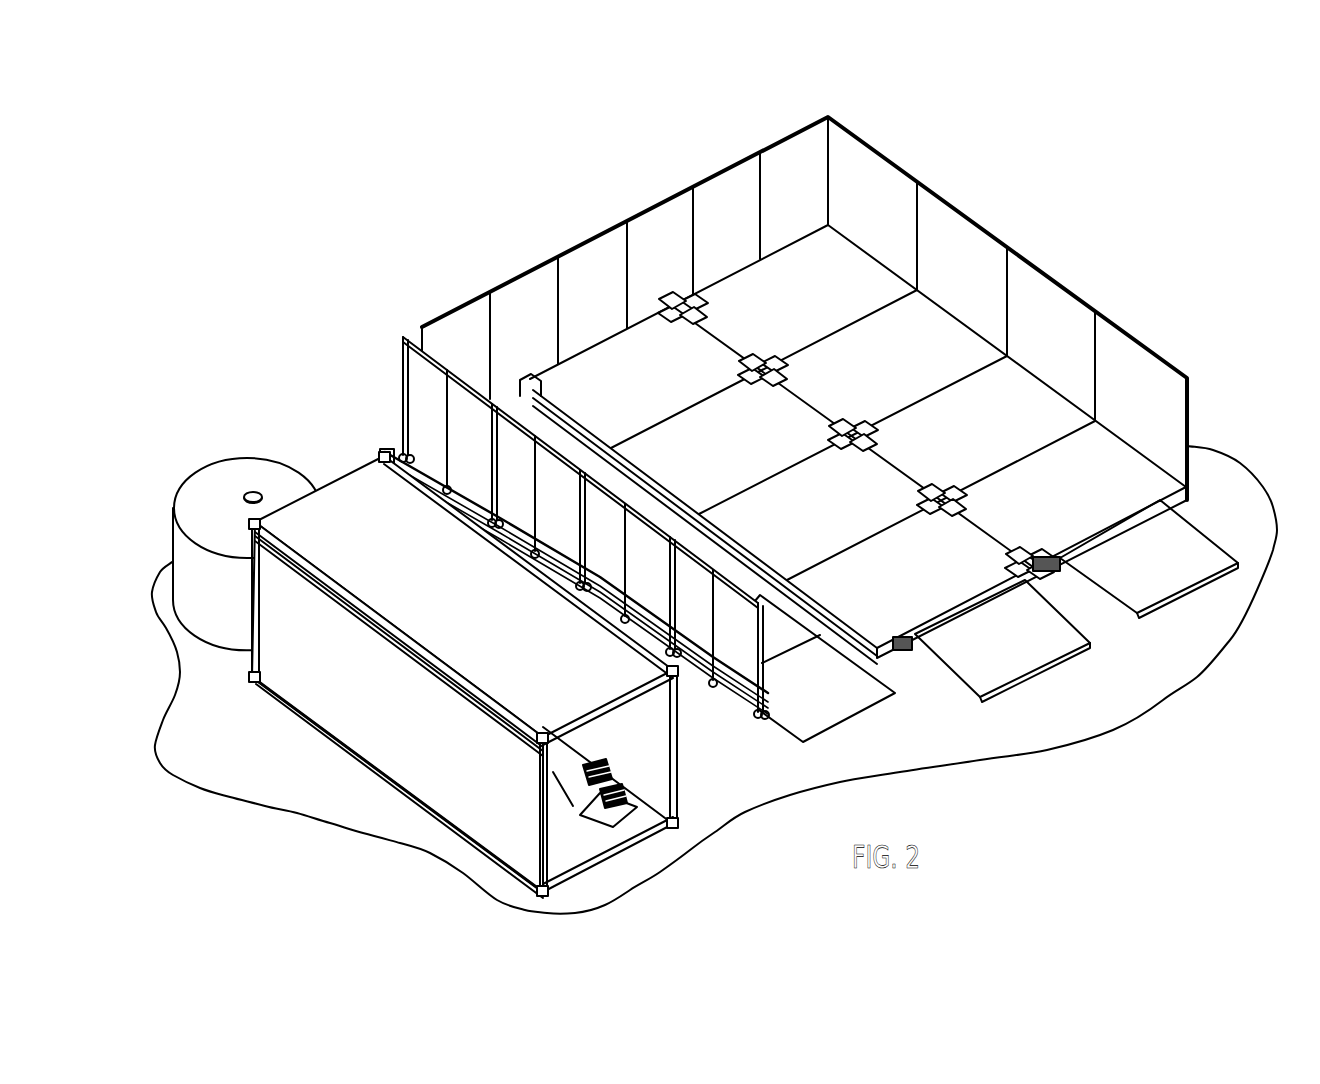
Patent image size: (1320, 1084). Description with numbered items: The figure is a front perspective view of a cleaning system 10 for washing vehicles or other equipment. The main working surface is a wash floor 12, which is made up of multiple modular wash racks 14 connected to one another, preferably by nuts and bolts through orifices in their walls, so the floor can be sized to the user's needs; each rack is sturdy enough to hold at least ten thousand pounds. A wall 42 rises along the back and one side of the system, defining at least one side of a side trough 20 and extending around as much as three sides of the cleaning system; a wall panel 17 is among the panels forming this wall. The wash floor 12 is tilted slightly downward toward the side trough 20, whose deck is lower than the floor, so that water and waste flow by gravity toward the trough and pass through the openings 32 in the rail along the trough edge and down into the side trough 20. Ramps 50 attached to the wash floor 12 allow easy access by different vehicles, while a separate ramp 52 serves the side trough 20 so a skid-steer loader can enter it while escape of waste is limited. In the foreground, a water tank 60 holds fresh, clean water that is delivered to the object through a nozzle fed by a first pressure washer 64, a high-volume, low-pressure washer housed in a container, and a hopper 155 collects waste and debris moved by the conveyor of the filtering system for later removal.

The cleaning system 10 is at (1104, 191).
The wash floor 12 is at (837, 255).
The wash racks 14 is at (806, 295).
The wall panel 17 is at (972, 367).
The wall 42 is at (1061, 305).
The side trough 20 is at (782, 680).
The openings 32 is at (783, 588).
The ramps 50 is at (1033, 653).
The ramp 52 is at (852, 700).
The water tank 60 is at (207, 475).
The first pressure washer 64 is at (627, 793).
The hopper 155 is at (582, 818).